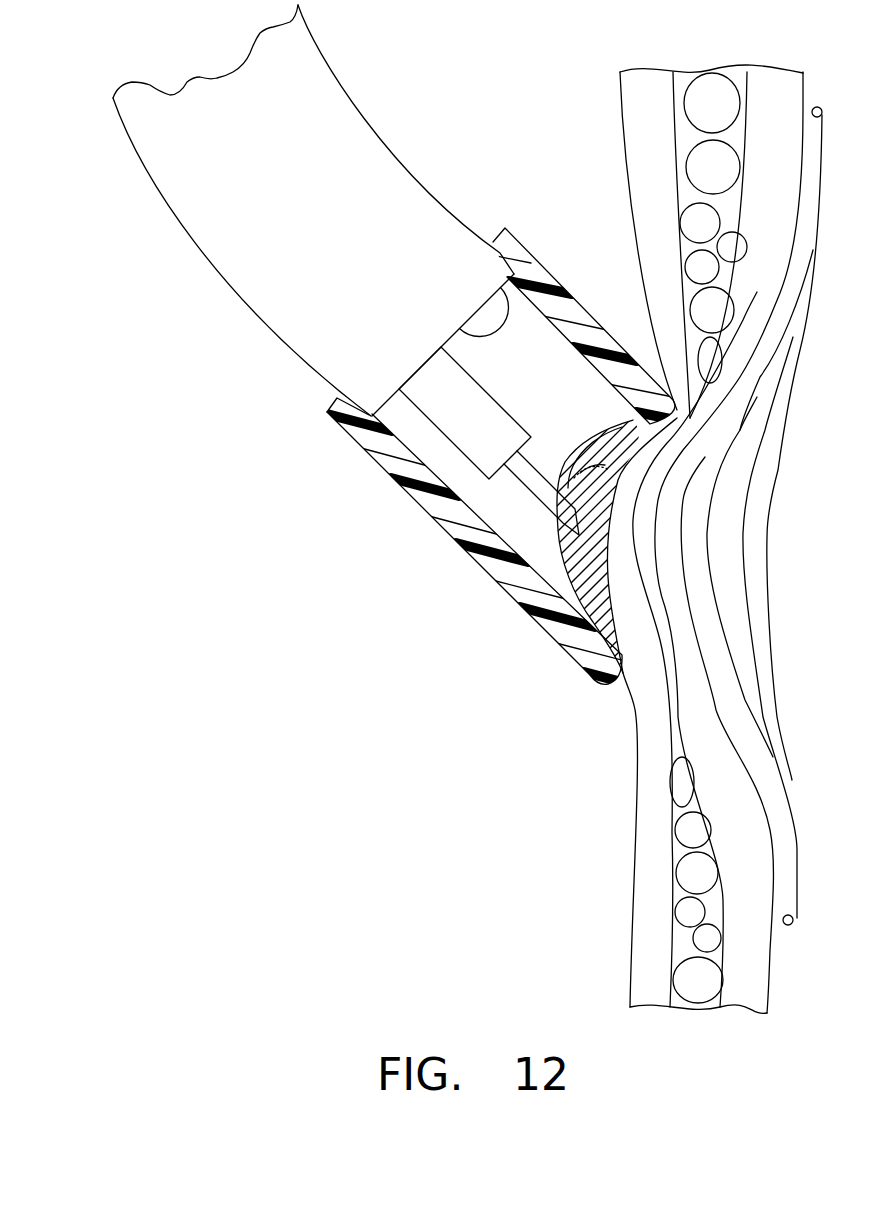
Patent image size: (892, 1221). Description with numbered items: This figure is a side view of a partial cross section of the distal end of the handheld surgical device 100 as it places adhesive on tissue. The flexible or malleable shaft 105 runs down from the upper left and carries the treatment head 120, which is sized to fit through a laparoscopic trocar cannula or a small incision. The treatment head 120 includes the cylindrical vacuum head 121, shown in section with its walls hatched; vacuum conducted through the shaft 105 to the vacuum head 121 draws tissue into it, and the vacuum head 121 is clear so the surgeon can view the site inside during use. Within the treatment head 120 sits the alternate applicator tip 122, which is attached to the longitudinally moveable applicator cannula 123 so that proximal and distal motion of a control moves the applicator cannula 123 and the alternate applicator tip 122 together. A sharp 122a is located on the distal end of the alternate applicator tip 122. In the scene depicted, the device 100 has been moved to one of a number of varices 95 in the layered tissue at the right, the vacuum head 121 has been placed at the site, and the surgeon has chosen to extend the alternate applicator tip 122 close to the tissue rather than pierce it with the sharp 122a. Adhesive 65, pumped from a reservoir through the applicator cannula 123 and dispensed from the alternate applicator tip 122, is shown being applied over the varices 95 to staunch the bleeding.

The surgical device 100 is at (188, 303).
The shaft 105 is at (183, 162).
The treatment head 120 is at (392, 555).
The vacuum head 121 is at (547, 275).
The alternate applicator tip 122 is at (533, 472).
The sharp 122a is at (597, 523).
The applicator cannula 123 is at (438, 380).
The adhesive 65 is at (590, 580).
The varices 95 is at (683, 648).